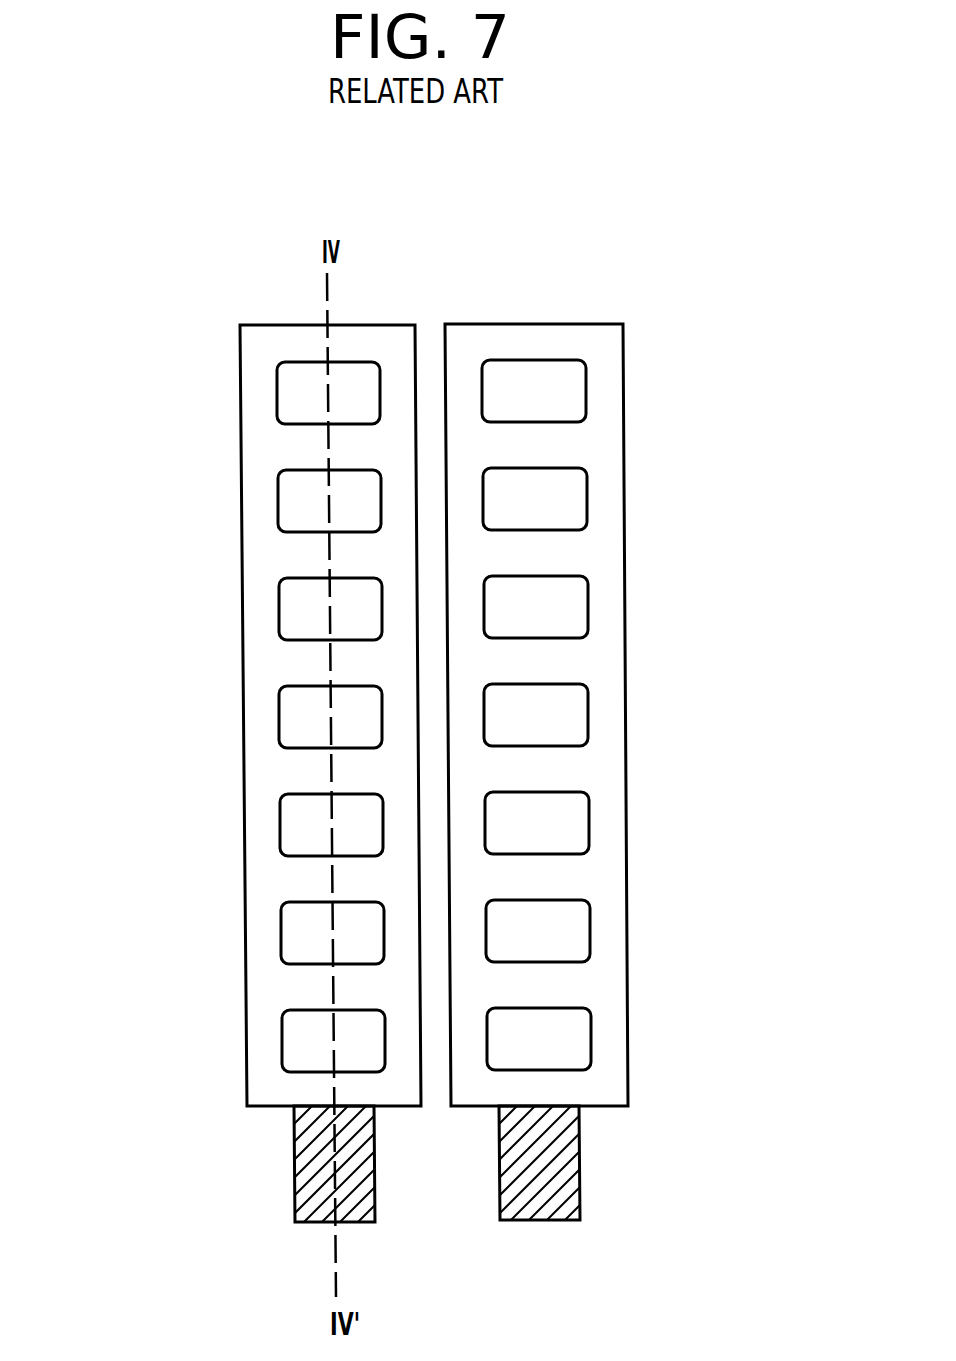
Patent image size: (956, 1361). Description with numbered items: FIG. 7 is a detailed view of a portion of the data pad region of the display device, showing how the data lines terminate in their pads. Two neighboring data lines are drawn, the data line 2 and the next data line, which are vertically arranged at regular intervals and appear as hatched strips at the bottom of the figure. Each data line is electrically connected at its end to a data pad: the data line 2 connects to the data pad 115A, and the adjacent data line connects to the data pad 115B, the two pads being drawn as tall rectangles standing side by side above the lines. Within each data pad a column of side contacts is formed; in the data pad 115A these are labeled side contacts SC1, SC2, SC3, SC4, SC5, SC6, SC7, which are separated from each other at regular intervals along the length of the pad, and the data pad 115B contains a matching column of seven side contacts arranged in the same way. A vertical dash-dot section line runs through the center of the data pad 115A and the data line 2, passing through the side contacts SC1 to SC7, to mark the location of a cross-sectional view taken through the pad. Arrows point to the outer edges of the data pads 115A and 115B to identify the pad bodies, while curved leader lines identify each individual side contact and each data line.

The side contact SC1 is at (299, 390).
The side contact SC2 is at (299, 498).
The side contact SC3 is at (299, 606).
The side contact SC4 is at (299, 714).
The side contact SC5 is at (299, 822).
The side contact SC6 is at (299, 930).
The side contact SC7 is at (299, 1038).
The data pad 115A is at (238, 875).
The data pad 115B is at (640, 873).
The data line 2 is at (307, 1157).